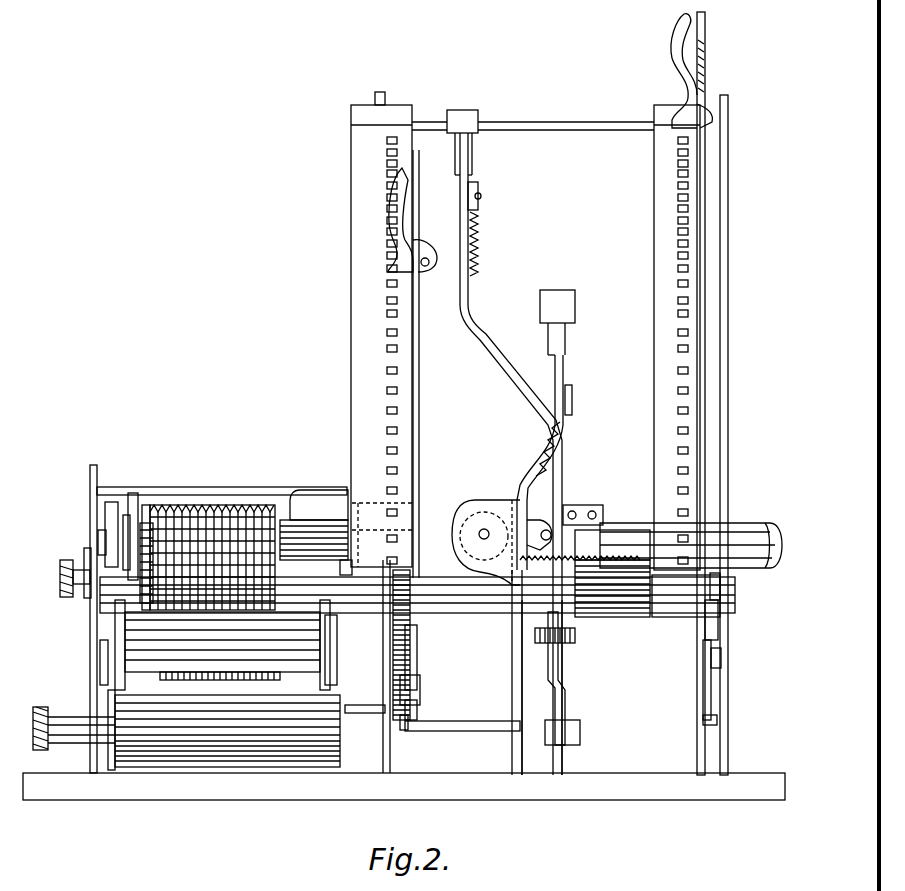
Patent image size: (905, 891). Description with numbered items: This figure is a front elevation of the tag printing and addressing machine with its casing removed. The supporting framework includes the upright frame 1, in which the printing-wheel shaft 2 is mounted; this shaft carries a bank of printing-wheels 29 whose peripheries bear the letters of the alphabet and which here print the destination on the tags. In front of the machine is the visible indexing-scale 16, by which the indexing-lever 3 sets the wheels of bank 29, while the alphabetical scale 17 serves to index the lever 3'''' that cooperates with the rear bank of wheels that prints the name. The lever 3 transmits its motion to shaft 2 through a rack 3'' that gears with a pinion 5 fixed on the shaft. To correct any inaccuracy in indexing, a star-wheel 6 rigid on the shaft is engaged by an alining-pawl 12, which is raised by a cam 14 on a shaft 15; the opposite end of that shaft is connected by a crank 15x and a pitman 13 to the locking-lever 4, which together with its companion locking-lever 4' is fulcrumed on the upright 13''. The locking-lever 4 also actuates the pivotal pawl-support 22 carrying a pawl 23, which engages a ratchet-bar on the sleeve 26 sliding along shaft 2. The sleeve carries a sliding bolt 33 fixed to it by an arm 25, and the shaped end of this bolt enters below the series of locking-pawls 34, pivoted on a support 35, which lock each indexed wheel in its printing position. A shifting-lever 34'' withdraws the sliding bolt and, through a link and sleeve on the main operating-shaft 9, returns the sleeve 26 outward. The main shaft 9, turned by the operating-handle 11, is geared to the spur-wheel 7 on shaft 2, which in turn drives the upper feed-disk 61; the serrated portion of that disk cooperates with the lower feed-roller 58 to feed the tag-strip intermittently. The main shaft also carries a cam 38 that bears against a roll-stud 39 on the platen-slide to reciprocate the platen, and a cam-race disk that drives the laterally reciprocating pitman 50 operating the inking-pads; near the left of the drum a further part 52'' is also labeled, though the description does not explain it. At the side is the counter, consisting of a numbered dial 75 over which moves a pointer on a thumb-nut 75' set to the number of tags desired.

The upright frame 1 is at (730, 432).
The printing-wheel shaft 2 is at (372, 594).
The indexing-lever 3 is at (710, 393).
The rack 3'' is at (734, 618).
The indexing-lever 3'''' is at (554, 437).
The locking-lever 4 is at (527, 532).
The locking-lever 4' is at (504, 442).
The pinion 5 is at (722, 590).
The star-wheel 6 is at (410, 598).
The spur-wheel 7 is at (410, 640).
The main operating-shaft 9 is at (691, 538).
The operating-handle 11 is at (372, 702).
The alining-pawl 12 is at (420, 694).
The pitman 13 is at (571, 678).
The upright 13'' is at (539, 687).
The cam 14 is at (418, 710).
The cam shaft 15 is at (476, 731).
The crank 15x is at (562, 722).
The visible indexing-scale 16 is at (656, 352).
The alphabetical scale 17 is at (352, 383).
The pivotal pawl-support 22 is at (536, 518).
The pawl 23 is at (512, 546).
The arm 25 is at (578, 505).
The sleeve 26 is at (612, 573).
The bank of printing-wheels 29 is at (254, 600).
The sliding bolt 33 is at (314, 525).
The locking-pawl 34 is at (208, 536).
The shifting-lever 34'' is at (576, 637).
The support 35 is at (290, 487).
The cam 38 is at (112, 537).
The roll-stud 39 is at (113, 502).
The pitman 50 is at (108, 523).
The arm 52'' is at (145, 520).
The lower feed-roller 58 is at (227, 731).
The feed-disk 61 is at (82, 680).
The dial 75 is at (69, 565).
The thumb-nut 75' is at (56, 576).